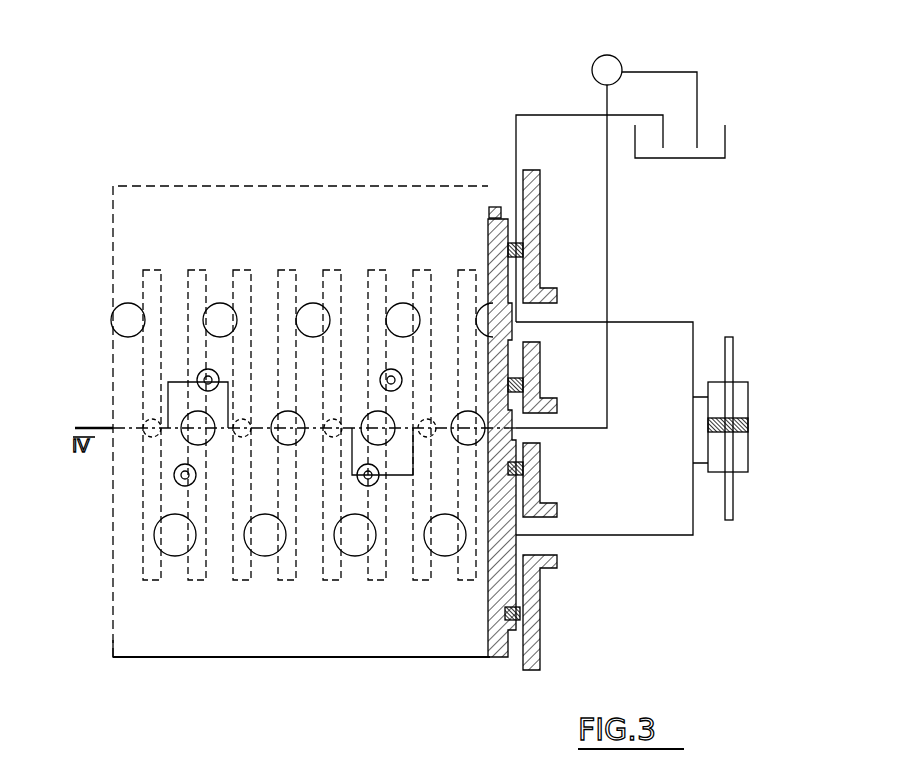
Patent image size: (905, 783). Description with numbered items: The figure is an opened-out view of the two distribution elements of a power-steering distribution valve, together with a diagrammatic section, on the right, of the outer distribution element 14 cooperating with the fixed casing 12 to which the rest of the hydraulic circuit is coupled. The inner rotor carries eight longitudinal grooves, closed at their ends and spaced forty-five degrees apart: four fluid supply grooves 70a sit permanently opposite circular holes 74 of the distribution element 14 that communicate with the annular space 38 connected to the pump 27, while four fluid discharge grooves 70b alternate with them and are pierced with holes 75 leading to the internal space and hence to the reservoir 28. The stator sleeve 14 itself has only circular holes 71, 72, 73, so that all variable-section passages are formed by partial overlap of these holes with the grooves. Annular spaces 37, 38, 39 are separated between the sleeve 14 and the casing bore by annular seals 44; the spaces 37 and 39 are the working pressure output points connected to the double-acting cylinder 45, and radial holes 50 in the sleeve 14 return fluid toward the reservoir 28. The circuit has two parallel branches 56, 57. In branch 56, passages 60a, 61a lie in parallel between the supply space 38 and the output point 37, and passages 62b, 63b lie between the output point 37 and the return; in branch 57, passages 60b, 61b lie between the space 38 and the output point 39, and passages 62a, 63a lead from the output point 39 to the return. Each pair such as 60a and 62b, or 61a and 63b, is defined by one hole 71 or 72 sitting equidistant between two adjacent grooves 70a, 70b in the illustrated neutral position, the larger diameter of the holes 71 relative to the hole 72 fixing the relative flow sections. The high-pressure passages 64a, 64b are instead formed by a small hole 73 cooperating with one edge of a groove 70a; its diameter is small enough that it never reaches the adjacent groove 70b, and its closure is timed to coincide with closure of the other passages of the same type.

The casing 12 is at (503, 580).
The distribution element 14 is at (115, 658).
The pump 27 is at (613, 60).
The reservoir 28 is at (708, 140).
The annular space 37 is at (522, 507).
The annular space 38 is at (520, 405).
The annular space 39 is at (518, 278).
The annular seal 44 is at (523, 392).
The double-acting cylinder 45 is at (748, 452).
The radial holes 50 is at (495, 207).
The branch 56 is at (103, 535).
The branch 57 is at (105, 322).
The passage 60a is at (372, 556).
The passage 60b is at (388, 312).
The passage 61a is at (283, 548).
The passage 61b is at (297, 320).
The passage 62a is at (421, 315).
The passage 62b is at (340, 556).
The passage 63a is at (320, 305).
The passage 63b is at (246, 540).
The passage for high pressures 64a is at (372, 483).
The passage for high pressures 64b is at (176, 392).
The fluid supply grooves 70a is at (473, 270).
The fluid discharge grooves 70b is at (425, 270).
The holes 71 is at (218, 303).
The hole 72 is at (124, 303).
The hole 73 is at (198, 378).
The holes 74 is at (463, 445).
The holes 75 is at (432, 426).